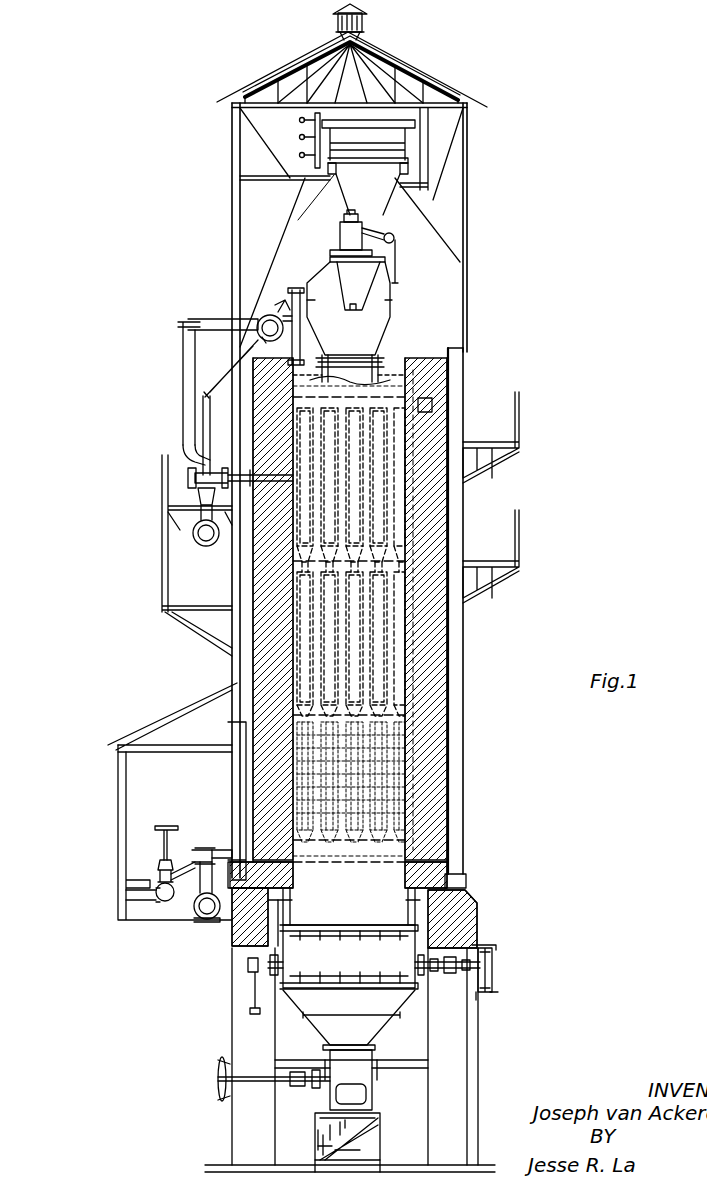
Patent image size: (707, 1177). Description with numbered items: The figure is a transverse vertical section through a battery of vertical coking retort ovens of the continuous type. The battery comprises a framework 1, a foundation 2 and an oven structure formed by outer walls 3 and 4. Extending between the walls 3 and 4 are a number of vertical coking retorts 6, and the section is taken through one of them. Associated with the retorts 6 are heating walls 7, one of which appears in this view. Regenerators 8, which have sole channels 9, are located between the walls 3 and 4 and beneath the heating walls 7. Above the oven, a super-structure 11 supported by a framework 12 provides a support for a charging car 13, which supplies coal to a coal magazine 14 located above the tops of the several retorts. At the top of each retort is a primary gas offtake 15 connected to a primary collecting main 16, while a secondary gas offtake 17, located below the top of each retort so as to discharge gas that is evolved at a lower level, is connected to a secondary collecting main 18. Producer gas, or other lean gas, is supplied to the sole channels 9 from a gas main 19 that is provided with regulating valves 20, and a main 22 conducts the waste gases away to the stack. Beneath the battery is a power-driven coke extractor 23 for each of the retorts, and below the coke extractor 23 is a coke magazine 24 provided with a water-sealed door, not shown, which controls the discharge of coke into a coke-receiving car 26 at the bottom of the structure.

The framework 1 is at (465, 1052).
The foundation 2 is at (468, 922).
The outer wall 3 is at (262, 660).
The outer wall 4 is at (447, 660).
The vertical coking retort 6 is at (385, 641).
The heating wall 7 is at (368, 450).
The regenerator 8 is at (402, 778).
The sole channel 9 is at (402, 861).
The super-structure 11 is at (438, 86).
The framework 12 is at (455, 378).
The charging car 13 is at (378, 196).
The coal magazine 14 is at (388, 296).
The primary gas offtake 15 is at (290, 297).
The primary collecting main 16 is at (260, 325).
The secondary gas offtake 17 is at (190, 478).
The secondary collecting main 18 is at (209, 546).
The gas main 19 is at (165, 900).
The regulating valve 20 is at (165, 840).
The main 22 is at (212, 920).
The coke extractor 23 is at (440, 972).
The coke magazine 24 is at (370, 1023).
The coke-receiving car 26 is at (378, 1132).